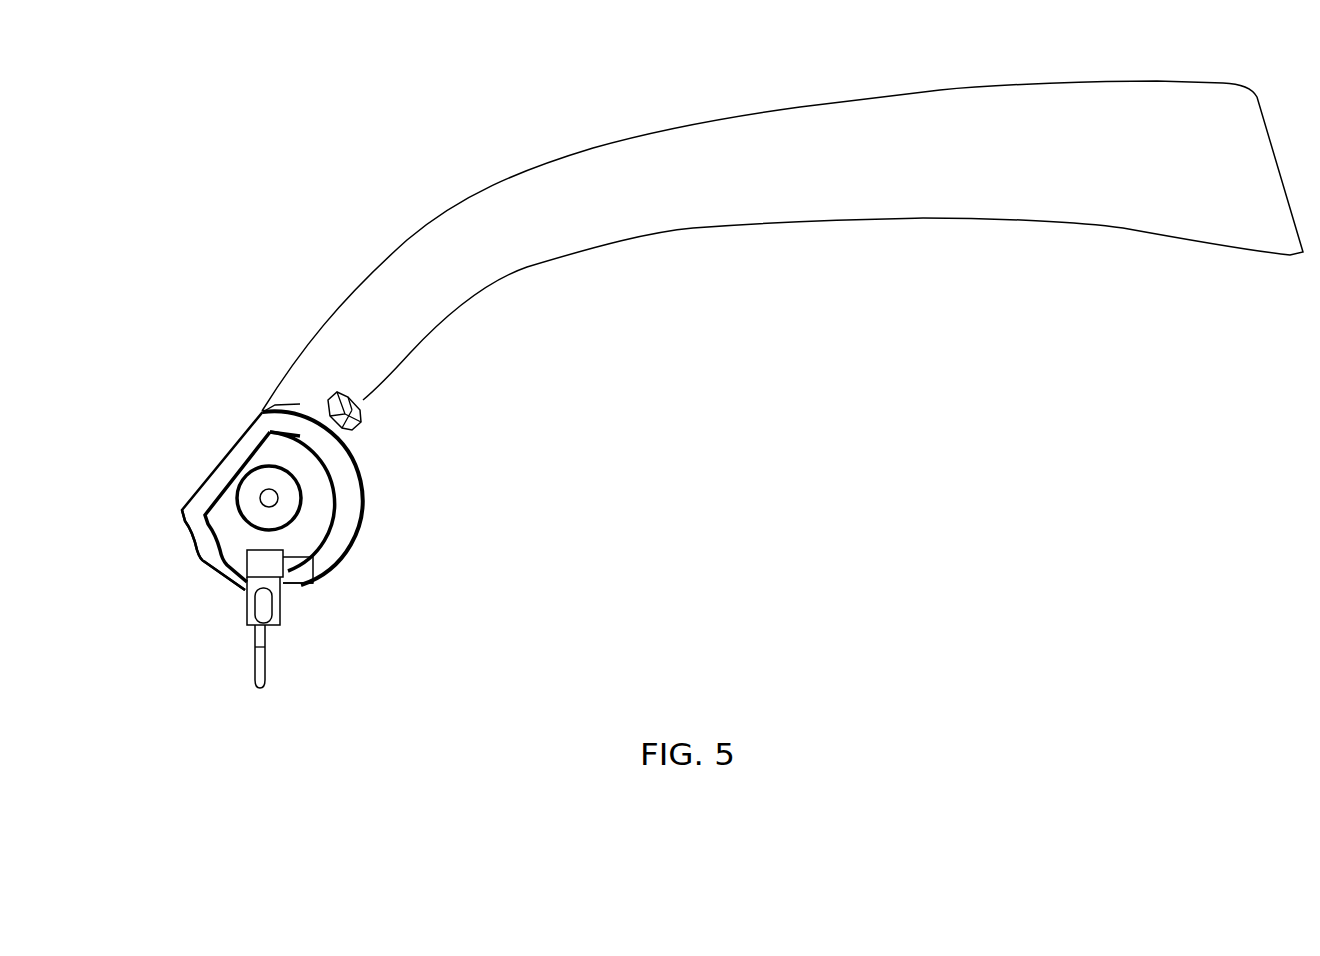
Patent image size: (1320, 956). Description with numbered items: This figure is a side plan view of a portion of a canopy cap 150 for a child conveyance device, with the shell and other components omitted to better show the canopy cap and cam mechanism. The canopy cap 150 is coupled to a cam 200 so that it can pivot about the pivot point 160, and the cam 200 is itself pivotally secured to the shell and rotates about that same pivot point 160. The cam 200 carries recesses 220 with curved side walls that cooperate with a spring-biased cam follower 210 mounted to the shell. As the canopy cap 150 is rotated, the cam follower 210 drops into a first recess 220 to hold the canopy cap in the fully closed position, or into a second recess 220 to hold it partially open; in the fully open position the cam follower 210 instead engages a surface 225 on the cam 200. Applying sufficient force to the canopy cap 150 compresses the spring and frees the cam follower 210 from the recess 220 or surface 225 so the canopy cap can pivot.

The canopy cap 150 is at (967, 167).
The pivot point 160 is at (268, 497).
The cam 200 is at (347, 480).
The cam follower 210 is at (243, 608).
The recess 220 is at (192, 550).
The surface 225 is at (176, 490).